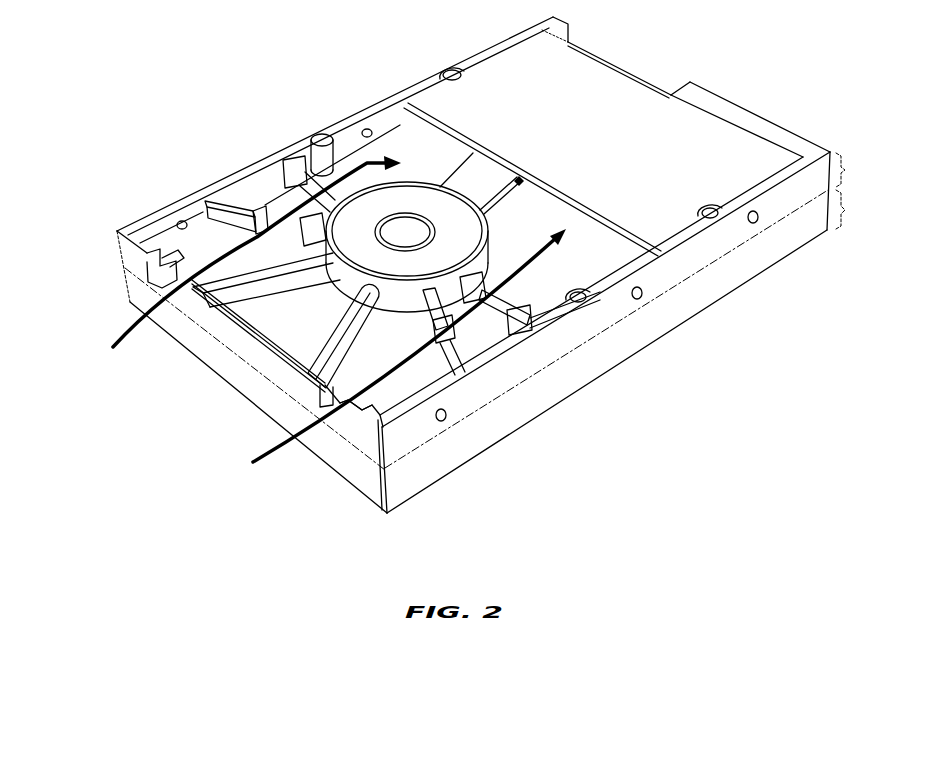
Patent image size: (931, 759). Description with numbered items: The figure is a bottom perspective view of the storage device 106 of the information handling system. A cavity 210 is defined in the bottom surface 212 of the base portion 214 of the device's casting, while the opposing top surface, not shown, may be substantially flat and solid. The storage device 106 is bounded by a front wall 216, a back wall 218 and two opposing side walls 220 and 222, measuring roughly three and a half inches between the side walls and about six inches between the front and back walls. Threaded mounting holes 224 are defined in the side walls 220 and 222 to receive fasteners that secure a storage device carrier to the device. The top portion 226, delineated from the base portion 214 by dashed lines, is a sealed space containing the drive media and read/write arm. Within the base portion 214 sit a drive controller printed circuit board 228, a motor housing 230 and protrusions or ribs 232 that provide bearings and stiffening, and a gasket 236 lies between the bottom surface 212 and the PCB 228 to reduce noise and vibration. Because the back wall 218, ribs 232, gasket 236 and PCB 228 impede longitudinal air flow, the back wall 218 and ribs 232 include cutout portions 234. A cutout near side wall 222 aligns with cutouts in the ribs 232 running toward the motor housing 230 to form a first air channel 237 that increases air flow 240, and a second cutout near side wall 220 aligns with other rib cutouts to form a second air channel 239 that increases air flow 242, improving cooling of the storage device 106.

The storage device 106 is at (472, 265).
The cavity 210 is at (170, 290).
The bottom surface 212 is at (277, 195).
The base portion 214 is at (854, 170).
The front wall 216 is at (720, 92).
The back wall 218 is at (240, 372).
The side wall 220 is at (538, 385).
The side wall 222 is at (222, 180).
The threaded mounting holes 224 is at (367, 130).
The top portion 226 is at (853, 209).
The drive controller printed circuit board 228 is at (728, 147).
The motor housing 230 is at (417, 197).
The ribs 232 is at (297, 168).
The cutout portion 234 is at (263, 213).
The gasket 236 is at (402, 106).
The first air channel 237 is at (190, 253).
The second air channel 239 is at (350, 412).
The air flow 240 is at (250, 264).
The air flow 242 is at (394, 353).